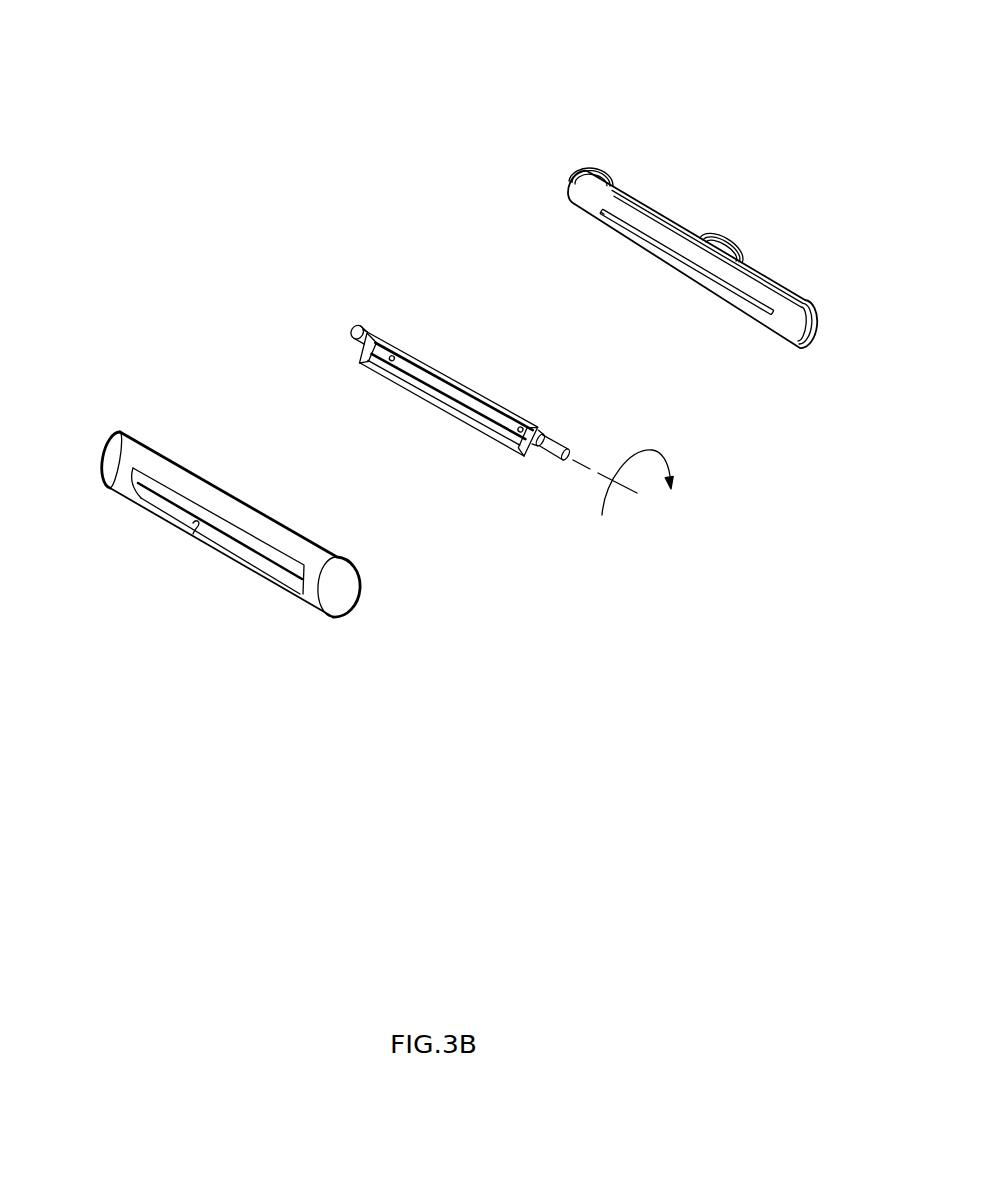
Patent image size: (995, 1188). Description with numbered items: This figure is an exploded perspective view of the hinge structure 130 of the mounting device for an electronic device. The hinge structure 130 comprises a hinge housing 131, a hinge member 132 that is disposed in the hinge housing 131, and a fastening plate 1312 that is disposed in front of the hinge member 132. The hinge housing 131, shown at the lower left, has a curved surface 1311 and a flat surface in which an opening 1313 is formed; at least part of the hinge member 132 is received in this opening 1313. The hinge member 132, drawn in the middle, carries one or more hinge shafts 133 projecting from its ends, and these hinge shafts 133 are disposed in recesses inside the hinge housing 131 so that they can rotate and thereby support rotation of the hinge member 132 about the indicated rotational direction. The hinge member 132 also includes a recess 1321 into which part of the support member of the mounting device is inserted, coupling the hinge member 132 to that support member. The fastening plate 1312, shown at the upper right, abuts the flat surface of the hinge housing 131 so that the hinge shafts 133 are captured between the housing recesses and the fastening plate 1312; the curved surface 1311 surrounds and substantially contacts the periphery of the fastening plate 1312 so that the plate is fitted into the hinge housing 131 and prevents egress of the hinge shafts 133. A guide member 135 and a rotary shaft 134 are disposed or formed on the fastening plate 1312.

The hinge structure 130 is at (61, 41).
The hinge housing 131 is at (181, 516).
The curved surface 1311 is at (197, 490).
The opening 1313 is at (194, 532).
The hinge member 132 is at (465, 393).
The recess 1321 is at (478, 418).
The hinge shafts 133 is at (355, 326).
The rotary shaft 134 is at (603, 170).
The guide member 135 is at (726, 238).
The fastening plate 1312 is at (797, 327).